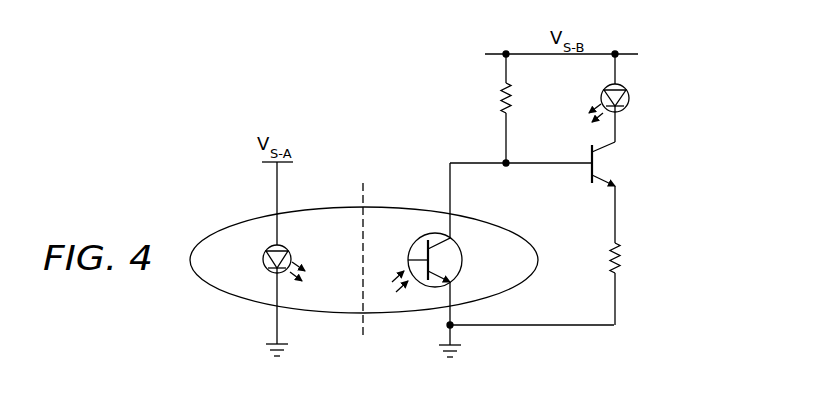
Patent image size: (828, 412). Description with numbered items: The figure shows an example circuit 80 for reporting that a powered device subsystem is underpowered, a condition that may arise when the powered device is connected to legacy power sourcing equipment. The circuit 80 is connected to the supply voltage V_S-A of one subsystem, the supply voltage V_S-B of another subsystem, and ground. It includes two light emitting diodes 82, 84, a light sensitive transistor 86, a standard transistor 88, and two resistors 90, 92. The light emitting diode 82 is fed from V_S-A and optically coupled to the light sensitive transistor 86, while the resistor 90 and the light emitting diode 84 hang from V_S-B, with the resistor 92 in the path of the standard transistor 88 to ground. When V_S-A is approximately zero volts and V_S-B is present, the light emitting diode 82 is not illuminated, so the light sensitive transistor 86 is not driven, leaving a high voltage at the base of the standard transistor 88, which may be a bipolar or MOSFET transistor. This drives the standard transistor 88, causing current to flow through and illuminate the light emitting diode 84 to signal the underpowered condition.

The circuit 80 is at (319, 99).
The light emitting diode 82 is at (262, 256).
The light emitting diode 84 is at (629, 96).
The light sensitive transistor 86 is at (462, 260).
The standard transistor 88 is at (589, 172).
The resistor 90 is at (500, 92).
The resistor 92 is at (621, 258).